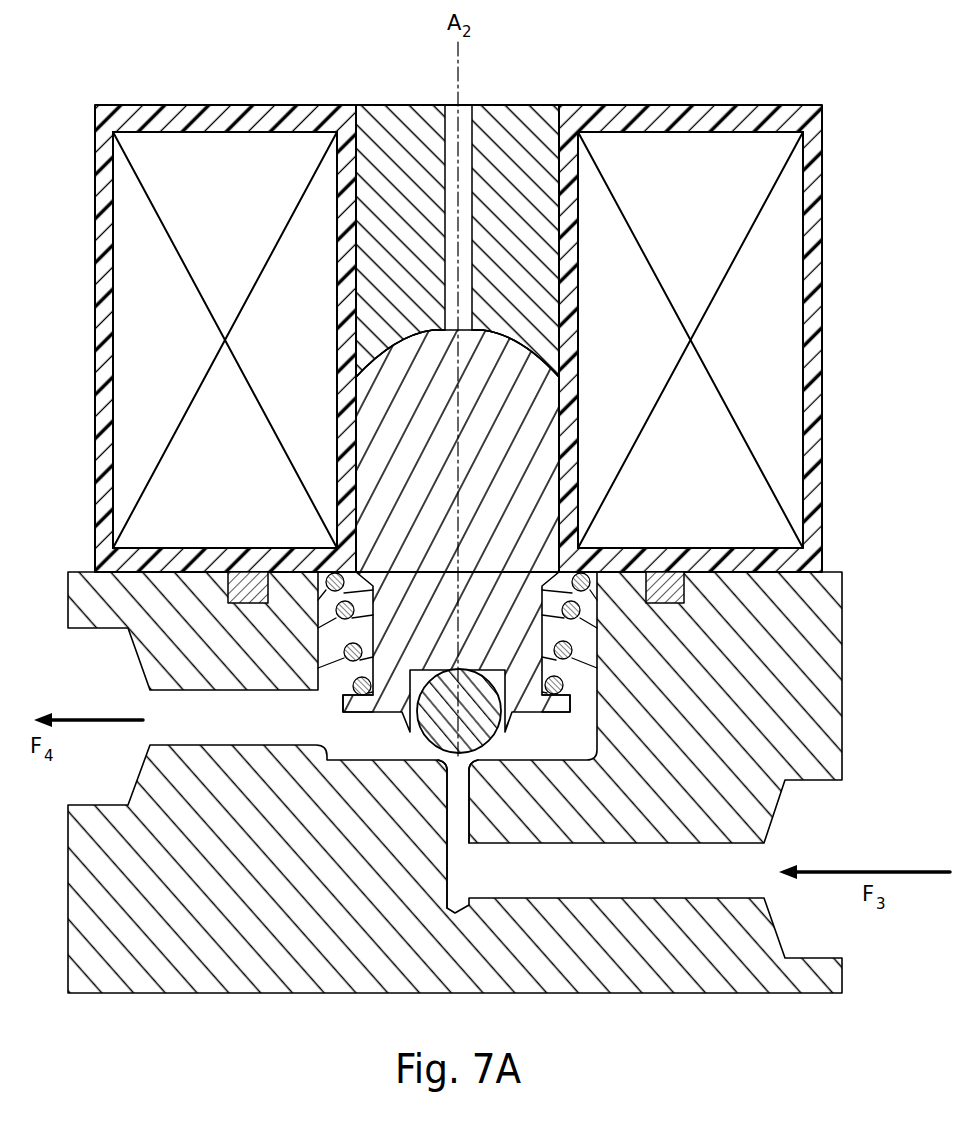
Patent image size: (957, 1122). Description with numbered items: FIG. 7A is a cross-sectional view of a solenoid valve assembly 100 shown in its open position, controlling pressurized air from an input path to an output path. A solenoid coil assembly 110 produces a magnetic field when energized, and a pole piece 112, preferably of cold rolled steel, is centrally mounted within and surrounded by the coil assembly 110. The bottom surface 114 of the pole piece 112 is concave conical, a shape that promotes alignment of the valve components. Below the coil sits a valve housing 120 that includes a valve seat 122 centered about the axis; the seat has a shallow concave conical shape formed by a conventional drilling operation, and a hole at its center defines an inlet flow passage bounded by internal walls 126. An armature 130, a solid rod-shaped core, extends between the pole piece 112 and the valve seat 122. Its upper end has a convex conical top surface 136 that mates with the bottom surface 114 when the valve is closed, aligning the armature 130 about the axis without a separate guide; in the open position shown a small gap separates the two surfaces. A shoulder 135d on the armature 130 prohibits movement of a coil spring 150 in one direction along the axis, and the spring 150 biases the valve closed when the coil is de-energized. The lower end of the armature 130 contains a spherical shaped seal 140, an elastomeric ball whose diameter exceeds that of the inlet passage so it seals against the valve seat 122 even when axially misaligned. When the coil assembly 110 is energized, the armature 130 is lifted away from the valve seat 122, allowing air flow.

The solenoid valve assembly 100 is at (75, 262).
The solenoid coil assembly 110 is at (233, 165).
The pole piece 112 is at (414, 137).
The bottom surface 114 is at (417, 353).
The valve housing 120 is at (805, 700).
The valve seat 122 is at (473, 762).
The internal walls 126 is at (462, 815).
The armature 130 is at (522, 445).
The shoulder 135d is at (548, 697).
The top surface 136 is at (522, 348).
The spherical shaped seal 140 is at (470, 715).
The coil spring 150 is at (370, 614).